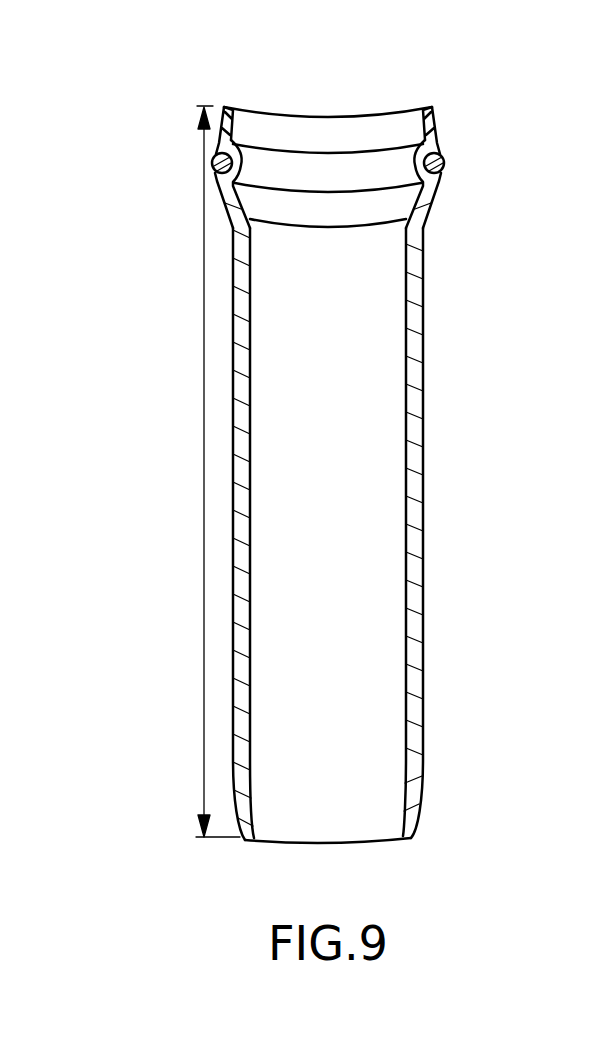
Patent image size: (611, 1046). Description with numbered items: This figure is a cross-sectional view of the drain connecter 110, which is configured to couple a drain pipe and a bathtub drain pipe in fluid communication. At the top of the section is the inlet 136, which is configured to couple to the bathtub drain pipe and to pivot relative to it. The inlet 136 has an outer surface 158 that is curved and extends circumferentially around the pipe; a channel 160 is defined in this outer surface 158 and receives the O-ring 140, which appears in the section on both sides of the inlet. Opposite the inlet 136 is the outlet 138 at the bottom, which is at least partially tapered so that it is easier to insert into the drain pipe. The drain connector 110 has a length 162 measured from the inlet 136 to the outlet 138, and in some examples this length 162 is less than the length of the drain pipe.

The drain connecter 110 is at (473, 173).
The inlet 136 is at (352, 116).
The outlet 138 is at (383, 843).
The O-ring 140 is at (210, 167).
The outer surface 158 is at (435, 203).
The channel 160 is at (210, 150).
The length 162 is at (205, 472).